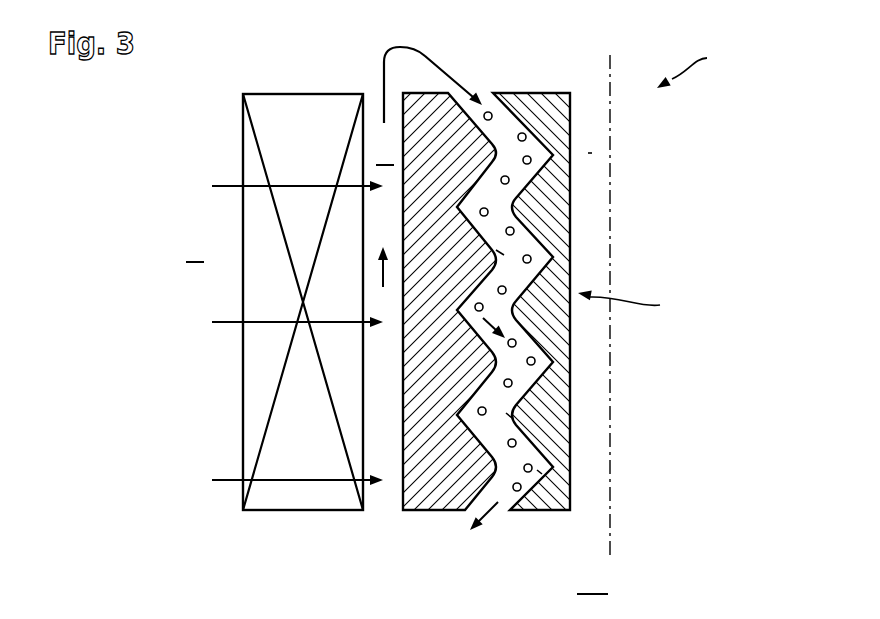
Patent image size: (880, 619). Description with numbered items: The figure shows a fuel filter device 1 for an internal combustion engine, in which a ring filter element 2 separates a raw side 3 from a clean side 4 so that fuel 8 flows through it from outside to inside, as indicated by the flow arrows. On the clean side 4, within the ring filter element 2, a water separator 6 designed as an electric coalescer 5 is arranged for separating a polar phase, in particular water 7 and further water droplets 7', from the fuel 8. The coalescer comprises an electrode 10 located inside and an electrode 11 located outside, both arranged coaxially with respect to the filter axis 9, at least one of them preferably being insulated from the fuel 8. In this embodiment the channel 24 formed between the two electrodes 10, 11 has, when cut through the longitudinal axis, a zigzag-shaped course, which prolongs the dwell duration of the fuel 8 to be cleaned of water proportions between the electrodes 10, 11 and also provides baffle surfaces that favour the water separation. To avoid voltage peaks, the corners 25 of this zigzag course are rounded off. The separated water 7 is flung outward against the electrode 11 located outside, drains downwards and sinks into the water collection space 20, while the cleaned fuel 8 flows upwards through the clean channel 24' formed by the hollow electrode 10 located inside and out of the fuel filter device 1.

The fuel filter device 1 is at (692, 62).
The ring filter element 2 is at (265, 300).
The raw side 3 is at (195, 248).
The clean side 4 is at (385, 152).
The electric coalescer 5 is at (639, 305).
The water separator 6 is at (639, 305).
The water 7 is at (603, 348).
The perforation opening 7' is at (535, 528).
The fuel 8 is at (384, 62).
The filter axis 9 is at (610, 548).
The electrode located inside 10 is at (550, 108).
The electrode located outside 11 is at (418, 503).
The water collection space 20 is at (592, 578).
The channel 24 is at (614, 489).
The clean channel 24' is at (642, 153).
The corners 25 is at (500, 253).